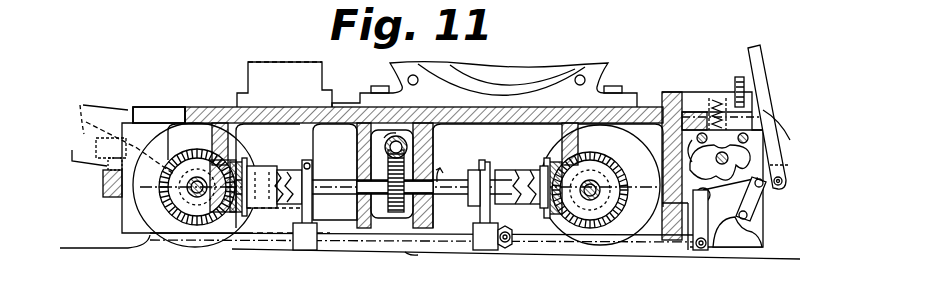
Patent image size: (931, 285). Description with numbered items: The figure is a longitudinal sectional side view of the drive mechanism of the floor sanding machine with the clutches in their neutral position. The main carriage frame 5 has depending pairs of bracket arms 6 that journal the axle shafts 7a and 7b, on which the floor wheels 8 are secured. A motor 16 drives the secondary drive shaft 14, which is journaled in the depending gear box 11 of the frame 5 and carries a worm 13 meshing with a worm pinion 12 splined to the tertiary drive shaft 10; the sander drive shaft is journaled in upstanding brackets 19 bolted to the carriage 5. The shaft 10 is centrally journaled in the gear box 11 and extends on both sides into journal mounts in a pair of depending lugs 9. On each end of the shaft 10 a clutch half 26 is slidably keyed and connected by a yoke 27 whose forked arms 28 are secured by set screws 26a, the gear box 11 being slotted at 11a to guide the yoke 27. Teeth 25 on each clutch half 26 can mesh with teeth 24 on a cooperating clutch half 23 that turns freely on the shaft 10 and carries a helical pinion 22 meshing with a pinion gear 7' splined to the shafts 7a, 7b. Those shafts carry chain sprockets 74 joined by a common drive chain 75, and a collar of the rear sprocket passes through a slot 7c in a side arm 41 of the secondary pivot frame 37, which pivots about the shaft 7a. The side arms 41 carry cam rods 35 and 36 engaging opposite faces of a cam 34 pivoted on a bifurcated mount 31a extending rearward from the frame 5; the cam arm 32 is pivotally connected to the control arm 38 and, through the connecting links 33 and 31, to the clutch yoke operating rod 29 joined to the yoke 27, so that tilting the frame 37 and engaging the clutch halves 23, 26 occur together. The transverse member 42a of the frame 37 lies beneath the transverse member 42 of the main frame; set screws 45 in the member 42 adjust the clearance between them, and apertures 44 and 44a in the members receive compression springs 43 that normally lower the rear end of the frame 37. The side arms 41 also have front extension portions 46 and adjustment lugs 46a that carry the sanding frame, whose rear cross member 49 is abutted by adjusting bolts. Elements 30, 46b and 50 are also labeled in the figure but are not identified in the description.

The main frame 5 is at (143, 107).
The bracket arms 6 is at (415, 163).
The pinion gear 7' is at (171, 216).
The axle shaft 7a is at (199, 193).
The axle shaft 7b is at (597, 194).
The slot 7c is at (596, 160).
The floor wheels 8 is at (238, 242).
The depending lugs 9 is at (224, 126).
The tertiary drive shaft 10 is at (346, 180).
The gear box 11 is at (481, 168).
The slot 11a is at (428, 262).
The worm pinion 12 is at (392, 210).
The worm 13 is at (408, 147).
The secondary drive shaft 14 is at (364, 132).
The motor 16 is at (558, 54).
The upstanding brackets 19 is at (246, 70).
The helical pinion 22 is at (238, 160).
The clutch half 23 is at (270, 212).
The teeth 24 is at (306, 238).
The teeth 25 is at (285, 172).
The clutch halves 26 is at (310, 204).
The set screws 26a is at (540, 196).
The yoke 27 is at (410, 246).
The forked arms 28 is at (307, 160).
The clutch yoke operating rod 29 is at (548, 214).
The link 30 is at (716, 233).
The connection link 31 is at (773, 248).
The bifurcated mount 31a is at (688, 240).
The extending arm 32 is at (778, 189).
The connecting link 33 is at (762, 212).
The cam 34 is at (750, 151).
The cam rod 35 is at (694, 162).
The cam rod 36 is at (749, 137).
The secondary frame 37 is at (122, 208).
The control arm 38 is at (790, 160).
The side arms 41 is at (112, 249).
The transverse connecting member 42 is at (671, 92).
The transversely extending connecting member 42a is at (700, 112).
The compression springs 43 is at (737, 96).
The aperture 44 is at (735, 76).
The aperture 44a is at (774, 108).
The set screws 45 is at (746, 78).
The front extension portions 46 is at (97, 104).
The adjustment lugs 46a is at (80, 106).
The plate portion 46b is at (96, 146).
The rear cross member 49 is at (104, 184).
The plate 50 is at (106, 165).
The chain sprockets 74 is at (130, 139).
The drive chain 75 is at (505, 248).